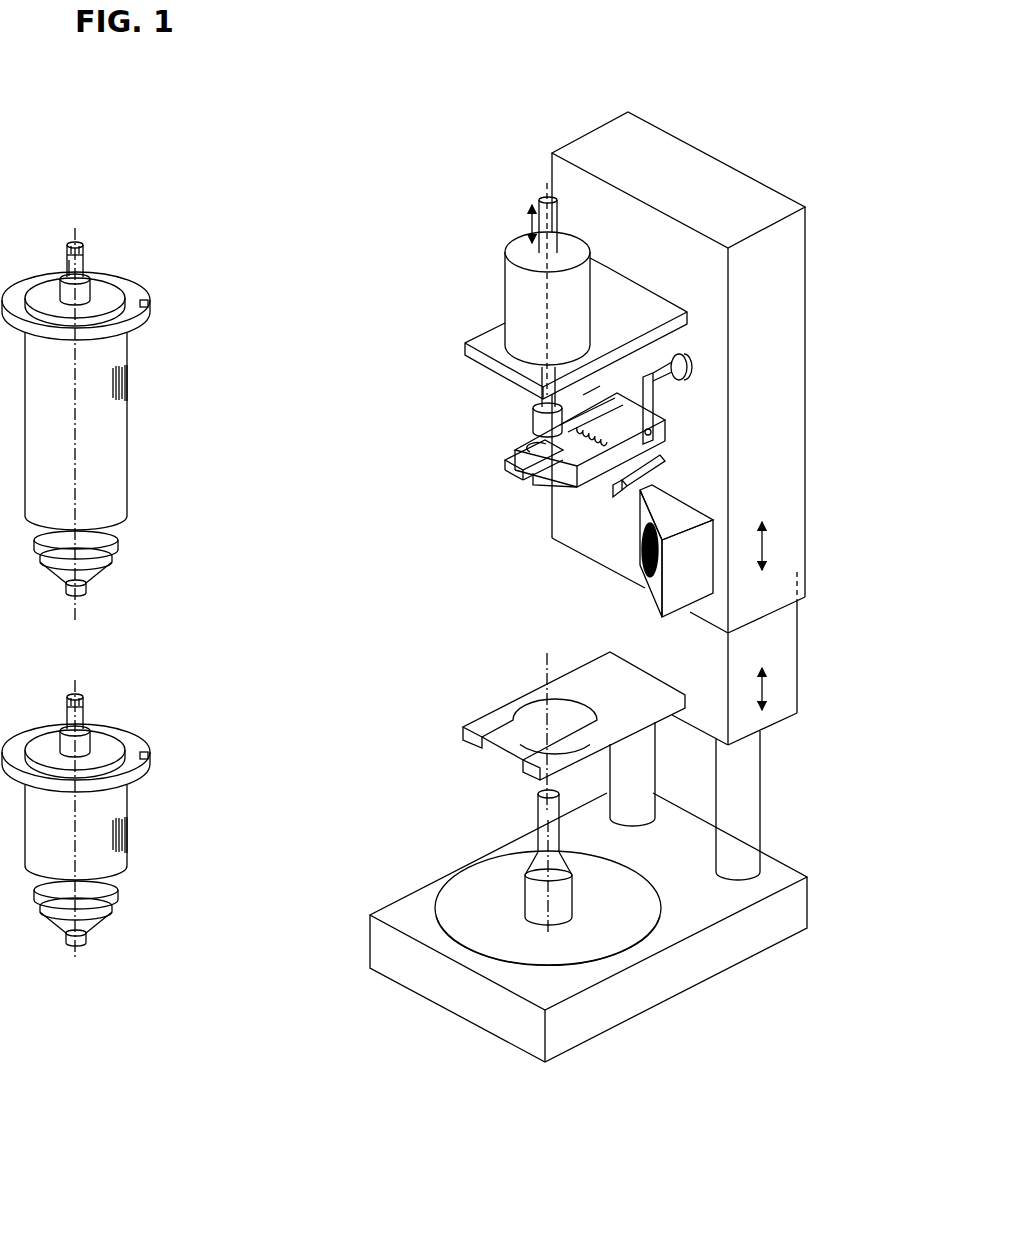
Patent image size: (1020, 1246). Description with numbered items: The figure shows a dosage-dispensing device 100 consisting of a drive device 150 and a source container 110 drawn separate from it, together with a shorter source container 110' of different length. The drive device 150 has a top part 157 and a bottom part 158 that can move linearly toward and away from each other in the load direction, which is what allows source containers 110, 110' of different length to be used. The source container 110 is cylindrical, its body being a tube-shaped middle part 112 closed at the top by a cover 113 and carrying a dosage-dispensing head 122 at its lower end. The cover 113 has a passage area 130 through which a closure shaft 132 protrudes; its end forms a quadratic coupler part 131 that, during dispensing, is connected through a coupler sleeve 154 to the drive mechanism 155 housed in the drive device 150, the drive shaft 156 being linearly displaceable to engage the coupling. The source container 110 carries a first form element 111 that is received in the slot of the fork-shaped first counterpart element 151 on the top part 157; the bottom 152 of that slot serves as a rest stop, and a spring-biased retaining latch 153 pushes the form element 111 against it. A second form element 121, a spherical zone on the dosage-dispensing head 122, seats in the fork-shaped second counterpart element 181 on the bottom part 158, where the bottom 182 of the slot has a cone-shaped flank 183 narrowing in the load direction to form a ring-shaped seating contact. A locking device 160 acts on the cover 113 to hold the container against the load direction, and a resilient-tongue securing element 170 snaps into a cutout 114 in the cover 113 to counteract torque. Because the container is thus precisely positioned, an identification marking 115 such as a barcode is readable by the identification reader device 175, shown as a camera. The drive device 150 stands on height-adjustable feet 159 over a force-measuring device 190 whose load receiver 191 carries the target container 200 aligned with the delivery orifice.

The dosage-dispensing device 100 is at (386, 115).
The source container 110 is at (136, 376).
The source container 110' is at (138, 820).
The first form element 111 is at (164, 259).
The tube-shaped middle part 112 is at (146, 431).
The cover 113 is at (146, 283).
The cutout 114 is at (135, 306).
The identification marking 115 is at (190, 369).
The second form element 121 is at (151, 553).
The dosage-dispensing head 122 is at (167, 592).
The passage area 130 is at (169, 232).
The coupler part 131 is at (167, 192).
The closure shaft 132 is at (167, 219).
The drive device 150 is at (700, 138).
The first counterpart element 151 is at (497, 328).
The bottom of the slot 152 is at (435, 493).
The retaining latch 153 is at (486, 440).
The coupler sleeve 154 is at (434, 402).
The drive mechanism 155 is at (448, 289).
The drive shaft 156 is at (455, 379).
The top part 157 is at (781, 423).
The bottom part 158 is at (781, 660).
The height-adjustable feet 159 is at (756, 817).
The locking device 160 is at (486, 514).
The securing element 170 is at (499, 479).
The identification reader device 175 is at (510, 562).
The second counterpart element 181 is at (496, 728).
The bottom of the slot 182 is at (430, 757).
The cone-shaped flank 183 is at (452, 715).
The force-measuring device 190 is at (557, 927).
The load receiver 191 is at (484, 889).
The target container 200 is at (439, 860).